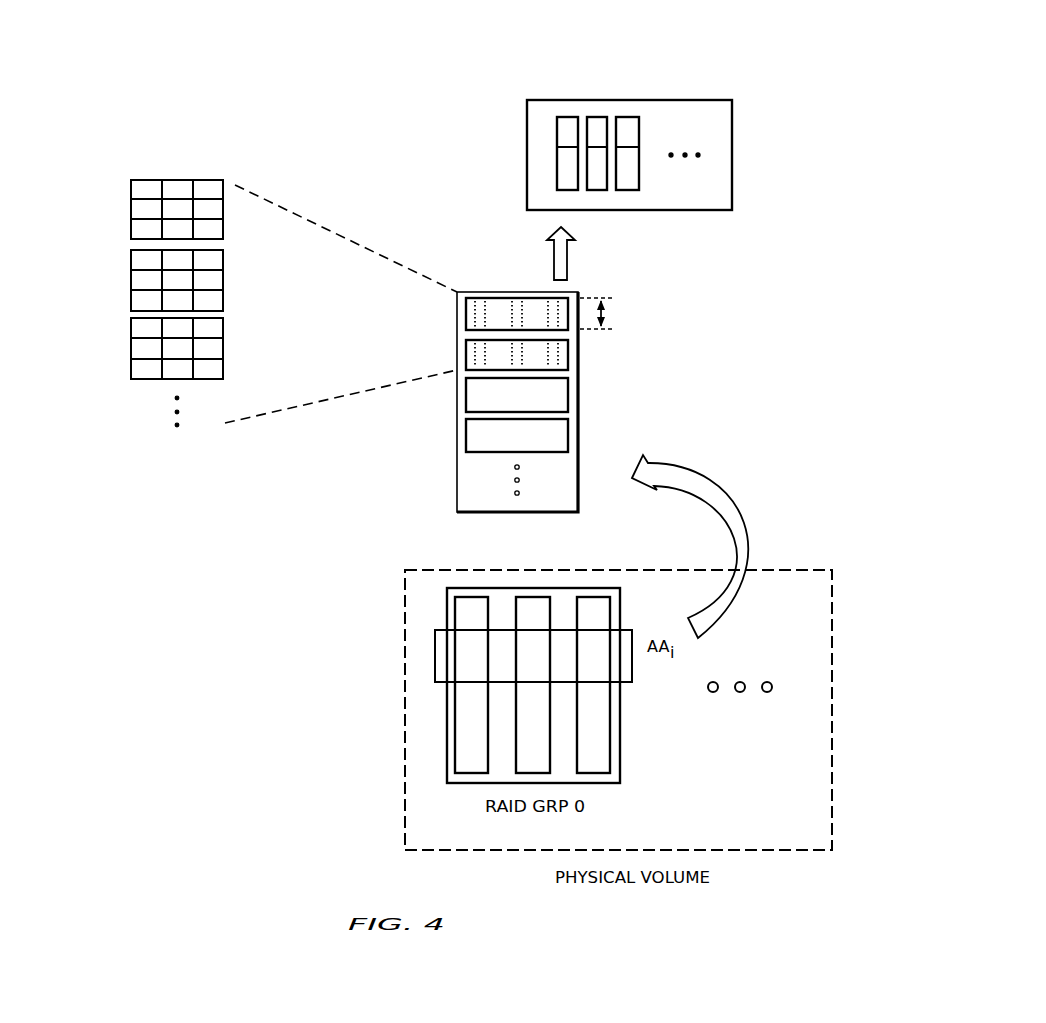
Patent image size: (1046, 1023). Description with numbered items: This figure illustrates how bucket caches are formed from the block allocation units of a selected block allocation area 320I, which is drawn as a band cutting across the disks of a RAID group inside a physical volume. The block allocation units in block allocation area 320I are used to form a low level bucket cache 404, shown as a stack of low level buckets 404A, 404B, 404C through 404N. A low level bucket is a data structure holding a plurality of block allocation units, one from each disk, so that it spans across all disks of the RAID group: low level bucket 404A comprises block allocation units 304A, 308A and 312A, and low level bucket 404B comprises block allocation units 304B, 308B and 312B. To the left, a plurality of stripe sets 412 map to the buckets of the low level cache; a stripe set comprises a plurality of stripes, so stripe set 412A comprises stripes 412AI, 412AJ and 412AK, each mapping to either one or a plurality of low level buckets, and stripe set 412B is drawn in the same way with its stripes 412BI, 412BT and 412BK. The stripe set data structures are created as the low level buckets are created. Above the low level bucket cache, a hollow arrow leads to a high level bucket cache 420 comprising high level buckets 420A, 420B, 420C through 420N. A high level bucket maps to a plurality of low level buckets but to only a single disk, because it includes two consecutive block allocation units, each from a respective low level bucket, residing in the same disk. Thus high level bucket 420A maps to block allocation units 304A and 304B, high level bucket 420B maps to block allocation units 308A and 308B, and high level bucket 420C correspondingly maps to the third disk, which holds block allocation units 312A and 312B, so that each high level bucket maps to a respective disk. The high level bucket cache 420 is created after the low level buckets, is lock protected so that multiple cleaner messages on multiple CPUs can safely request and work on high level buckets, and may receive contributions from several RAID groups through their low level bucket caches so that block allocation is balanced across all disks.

The stripe sets 412 is at (171, 271).
The stripe set 412A is at (131, 205).
The stripe set 412B is at (131, 296).
The stripe 412AI is at (145, 183).
The stripe 412AJ is at (179, 182).
The stripe 412AK is at (210, 185).
The stripe 412BI is at (140, 262).
The stripe 412BT is at (178, 257).
The stripe 412BK is at (213, 262).
The low level bucket cache 404 is at (578, 488).
The low level bucket 404A is at (466, 305).
The low level bucket 404B is at (570, 362).
The low level bucket 404C is at (472, 398).
The low level bucket 404N is at (465, 492).
The block allocation unit 304A is at (565, 135).
The block allocation unit 304B is at (565, 170).
The block allocation unit 308A is at (593, 123).
The block allocation unit 308B is at (596, 180).
The block allocation unit 312A is at (630, 128).
The block allocation unit 312B is at (630, 178).
The high level bucket cache 420 is at (732, 190).
The high level bucket 420A is at (567, 118).
The high level bucket 420B is at (602, 118).
The high level bucket 420C is at (630, 118).
The high level bucket 420N is at (700, 155).
The block allocation area 320I is at (435, 655).